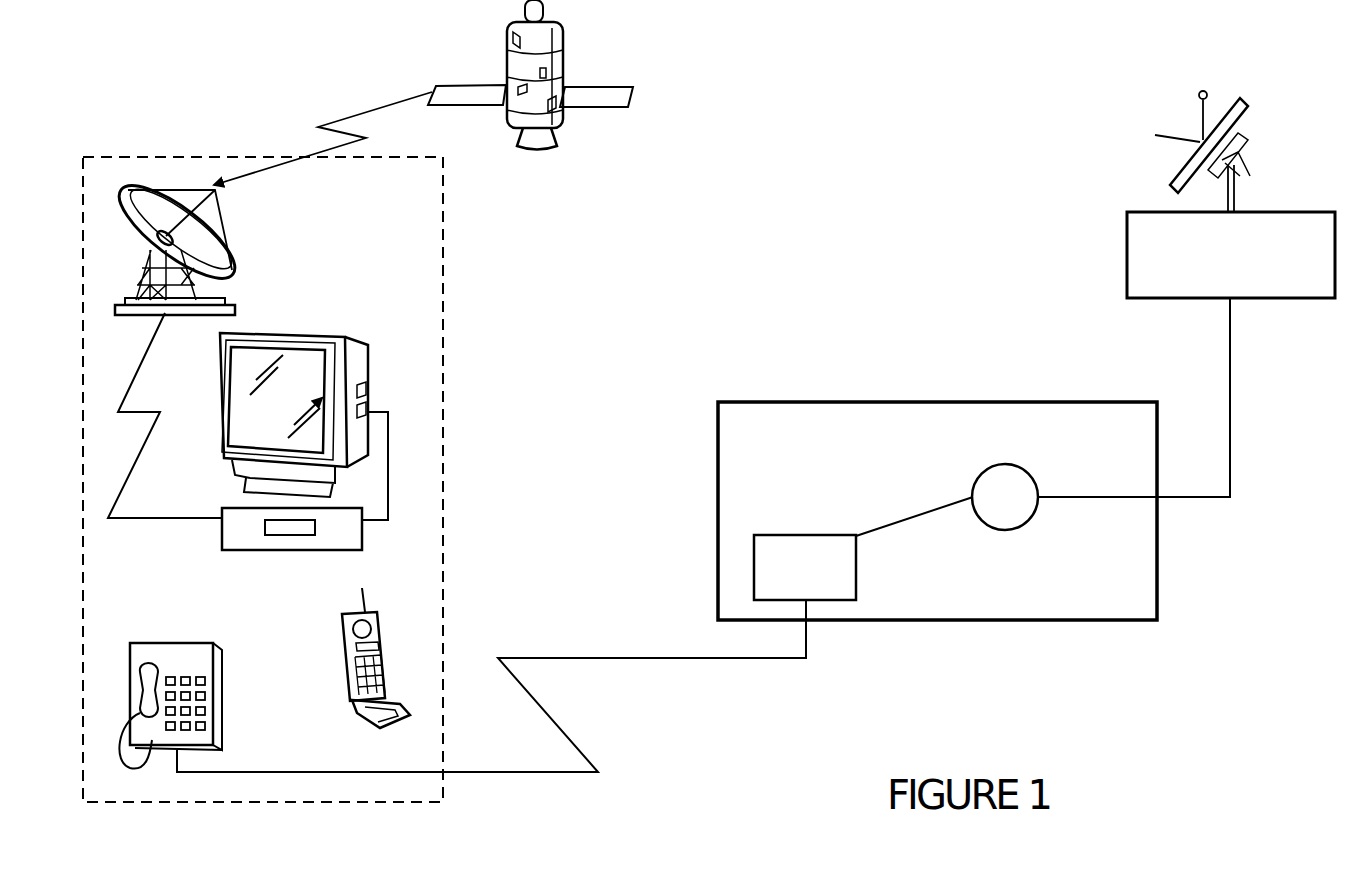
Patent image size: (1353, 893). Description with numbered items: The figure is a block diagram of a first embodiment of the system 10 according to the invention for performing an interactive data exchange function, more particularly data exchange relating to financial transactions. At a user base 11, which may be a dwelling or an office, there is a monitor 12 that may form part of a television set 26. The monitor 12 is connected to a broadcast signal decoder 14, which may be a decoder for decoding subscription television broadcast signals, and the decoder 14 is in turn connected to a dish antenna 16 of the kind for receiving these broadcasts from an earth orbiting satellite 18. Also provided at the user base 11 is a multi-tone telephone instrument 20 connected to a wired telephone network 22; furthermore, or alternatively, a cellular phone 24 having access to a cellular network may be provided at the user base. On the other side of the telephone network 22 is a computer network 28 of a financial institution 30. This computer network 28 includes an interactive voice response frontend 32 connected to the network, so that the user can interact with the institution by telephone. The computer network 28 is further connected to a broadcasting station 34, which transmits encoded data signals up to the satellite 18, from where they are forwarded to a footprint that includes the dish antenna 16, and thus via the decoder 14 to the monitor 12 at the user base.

The system 10 is at (906, 133).
The user base 11 is at (164, 157).
The monitor 12 is at (295, 360).
The broadcast signal decoder 14 is at (222, 532).
The dish antenna 16 is at (212, 268).
The earth orbiting satellite 18 is at (578, 90).
The multi-tone telephone instrument 20 is at (187, 655).
The wired telephone network 22 is at (637, 657).
The cellular phone 24 is at (375, 662).
The television set 26 is at (362, 372).
The computer network 28 is at (1019, 509).
The financial institution 30 is at (1166, 418).
The interactive voice response (IVR) frontend 32 is at (806, 537).
The broadcasting station 34 is at (1127, 265).